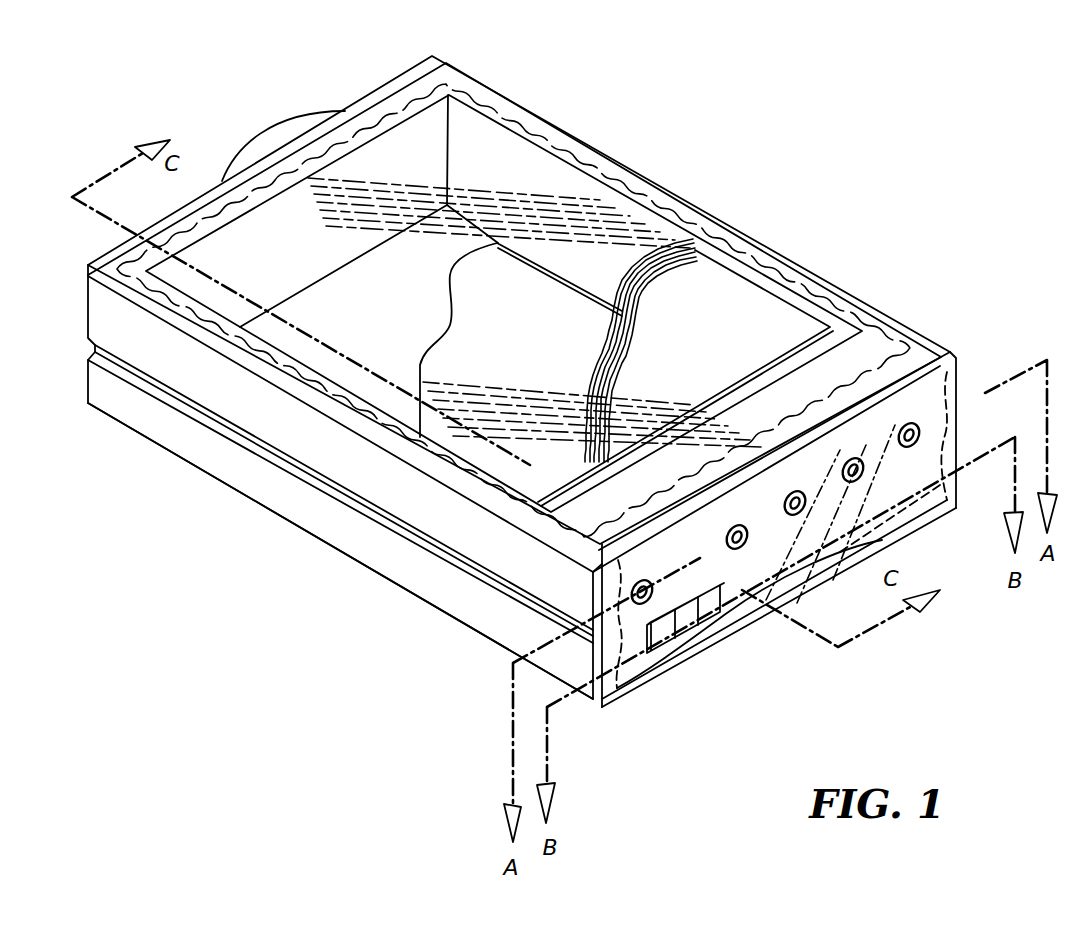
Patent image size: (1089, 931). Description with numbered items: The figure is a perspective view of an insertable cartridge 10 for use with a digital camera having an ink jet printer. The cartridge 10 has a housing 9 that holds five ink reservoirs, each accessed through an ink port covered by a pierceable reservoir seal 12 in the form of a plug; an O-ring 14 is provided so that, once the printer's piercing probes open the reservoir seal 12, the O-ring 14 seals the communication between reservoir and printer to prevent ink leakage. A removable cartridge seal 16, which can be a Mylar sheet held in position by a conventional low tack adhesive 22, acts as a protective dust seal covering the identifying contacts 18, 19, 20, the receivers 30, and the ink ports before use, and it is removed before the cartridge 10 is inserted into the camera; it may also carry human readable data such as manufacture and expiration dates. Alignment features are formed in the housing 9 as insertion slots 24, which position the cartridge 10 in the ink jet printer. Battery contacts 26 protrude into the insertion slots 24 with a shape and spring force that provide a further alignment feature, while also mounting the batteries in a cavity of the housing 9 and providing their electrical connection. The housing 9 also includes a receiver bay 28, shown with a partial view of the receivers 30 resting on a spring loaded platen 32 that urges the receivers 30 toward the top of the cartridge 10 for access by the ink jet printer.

The cartridge 10 is at (707, 108).
The housing 9 is at (703, 209).
The reservoir seal 12 is at (918, 438).
The O-ring 14 is at (921, 442).
The cartridge seal 16 is at (841, 299).
The identifying contact 18 is at (663, 640).
The identifying contact 19 is at (688, 628).
The identifying contact 20 is at (713, 610).
The low tack adhesive 22 is at (766, 263).
The insertion slot 24 is at (437, 557).
The battery contact 26 is at (570, 624).
The receiver bay 28 is at (298, 270).
The receiver 30 is at (605, 340).
The spring loaded platen 32 is at (440, 333).